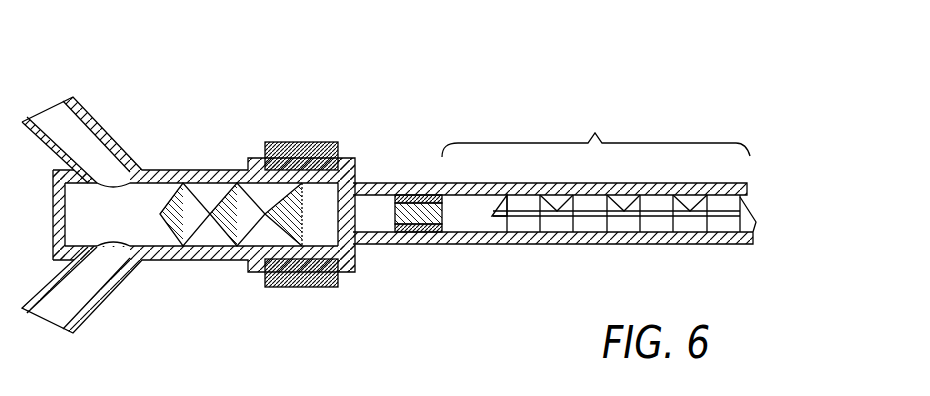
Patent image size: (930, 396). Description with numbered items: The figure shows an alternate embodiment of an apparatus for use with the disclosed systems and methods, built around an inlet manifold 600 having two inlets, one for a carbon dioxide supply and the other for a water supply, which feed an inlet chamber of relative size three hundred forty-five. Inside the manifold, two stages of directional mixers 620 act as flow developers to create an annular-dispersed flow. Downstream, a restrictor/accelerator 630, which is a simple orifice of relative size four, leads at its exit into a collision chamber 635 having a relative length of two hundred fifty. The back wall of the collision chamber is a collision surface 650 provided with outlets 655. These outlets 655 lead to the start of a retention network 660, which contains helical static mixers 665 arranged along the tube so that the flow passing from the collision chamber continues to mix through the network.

The inlet manifold 600 is at (195, 93).
The directional mixers 620 is at (185, 228).
The restrictor/accelerator 630 is at (355, 212).
The collision chamber 635 is at (367, 234).
The collision surface 650 is at (455, 221).
The outlets 655 is at (441, 200).
The retention network 660 is at (596, 200).
The helical static mixers 665 is at (616, 216).